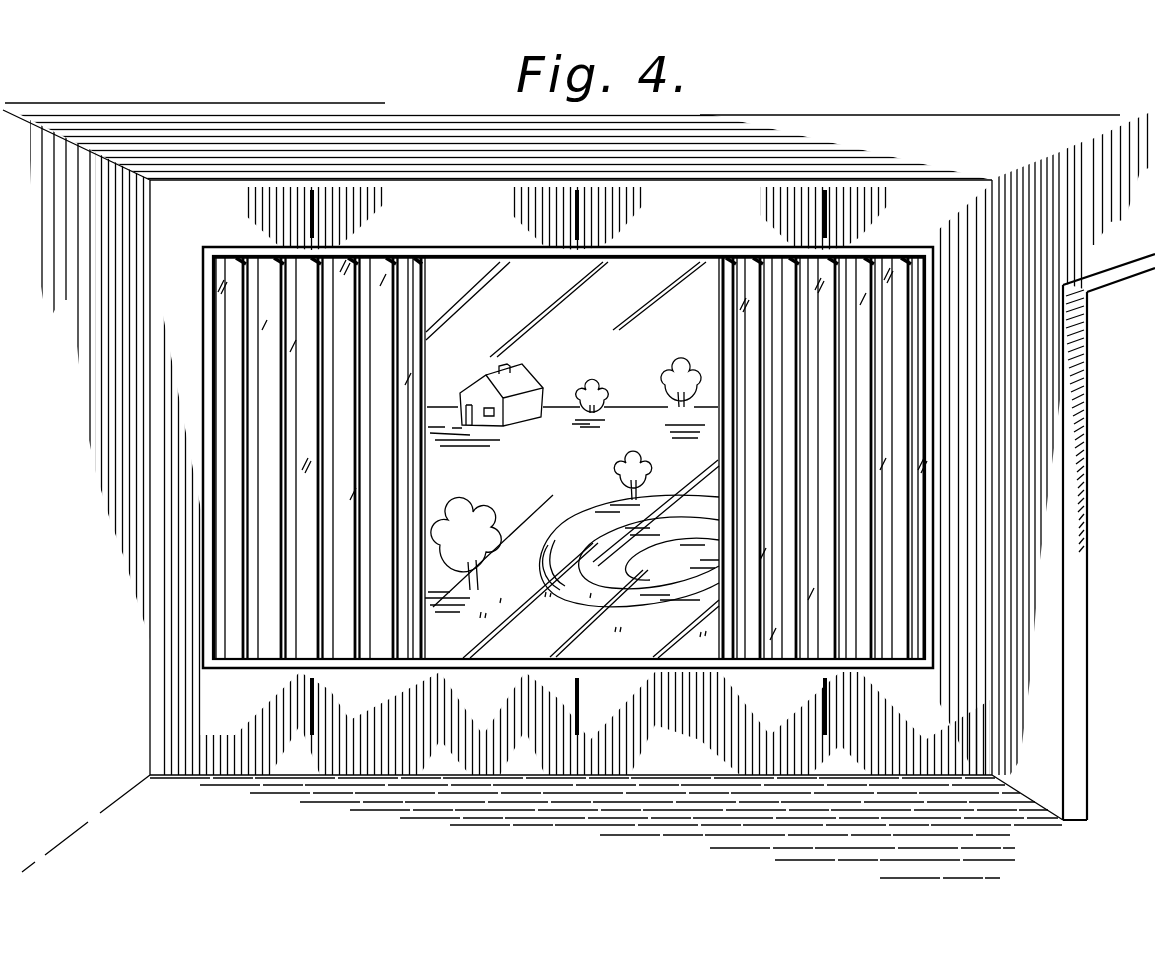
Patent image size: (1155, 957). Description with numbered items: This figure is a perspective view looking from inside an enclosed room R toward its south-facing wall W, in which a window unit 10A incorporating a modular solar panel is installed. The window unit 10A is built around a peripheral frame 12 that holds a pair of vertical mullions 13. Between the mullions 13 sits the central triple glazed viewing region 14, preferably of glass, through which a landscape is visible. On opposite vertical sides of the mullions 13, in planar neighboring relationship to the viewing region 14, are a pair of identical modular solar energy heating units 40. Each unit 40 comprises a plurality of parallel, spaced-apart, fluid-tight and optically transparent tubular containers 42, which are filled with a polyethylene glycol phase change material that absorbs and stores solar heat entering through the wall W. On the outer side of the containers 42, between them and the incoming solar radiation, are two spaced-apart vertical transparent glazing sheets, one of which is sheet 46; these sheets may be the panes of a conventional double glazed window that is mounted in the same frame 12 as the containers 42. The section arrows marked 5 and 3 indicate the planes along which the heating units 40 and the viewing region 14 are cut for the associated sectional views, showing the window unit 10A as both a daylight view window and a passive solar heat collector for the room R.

The window unit 10A is at (717, 228).
The peripheral frame 12 is at (432, 668).
The mullions 13 is at (720, 331).
The central triple glazed viewing region 14 is at (629, 278).
The modular solar energy heating units 40 is at (237, 250).
The tubular containers 42 is at (315, 462).
The transparent glazing sheet 46 is at (841, 565).
The south-facing wall W is at (907, 172).
The room R is at (110, 517).
The section line 5 is at (345, 205).
The section line 3 is at (600, 205).